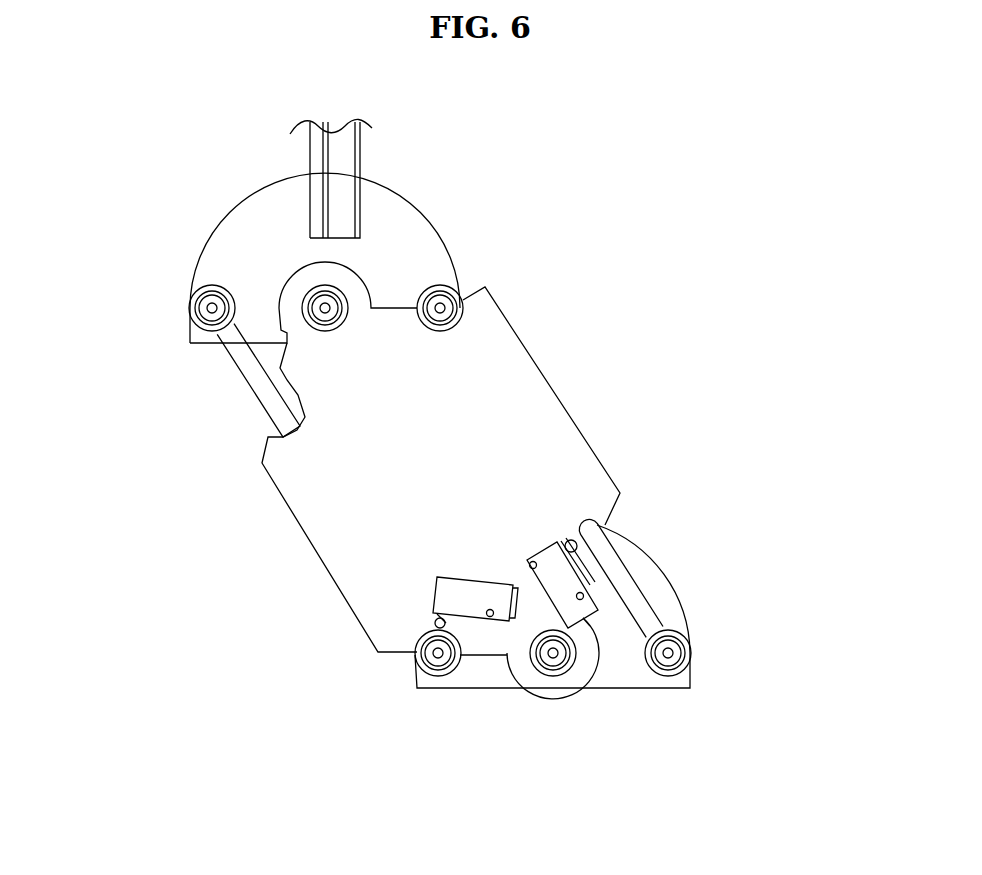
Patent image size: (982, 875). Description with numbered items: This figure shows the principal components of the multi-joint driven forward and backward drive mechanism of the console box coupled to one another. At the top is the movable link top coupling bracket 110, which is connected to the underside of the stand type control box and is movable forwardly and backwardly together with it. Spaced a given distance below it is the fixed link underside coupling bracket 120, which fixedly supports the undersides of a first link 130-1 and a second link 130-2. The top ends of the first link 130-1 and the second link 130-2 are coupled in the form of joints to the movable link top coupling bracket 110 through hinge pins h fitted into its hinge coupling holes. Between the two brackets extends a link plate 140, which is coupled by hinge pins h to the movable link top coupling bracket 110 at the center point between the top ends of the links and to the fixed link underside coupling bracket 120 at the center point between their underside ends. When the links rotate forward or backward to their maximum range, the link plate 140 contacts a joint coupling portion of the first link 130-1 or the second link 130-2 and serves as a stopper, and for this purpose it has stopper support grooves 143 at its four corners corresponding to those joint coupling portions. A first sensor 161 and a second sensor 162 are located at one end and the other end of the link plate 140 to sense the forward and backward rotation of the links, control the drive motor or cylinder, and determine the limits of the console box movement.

The movable link top coupling bracket 110 is at (407, 217).
The fixed link underside coupling bracket 120 is at (622, 675).
The first link 130-1 is at (260, 396).
The second link 130-2 is at (627, 590).
The link plate 140 is at (555, 395).
The stopper support grooves 143 is at (458, 320).
The first sensor 161 is at (468, 593).
The second sensor 162 is at (540, 542).
The hinge pins h is at (210, 308).